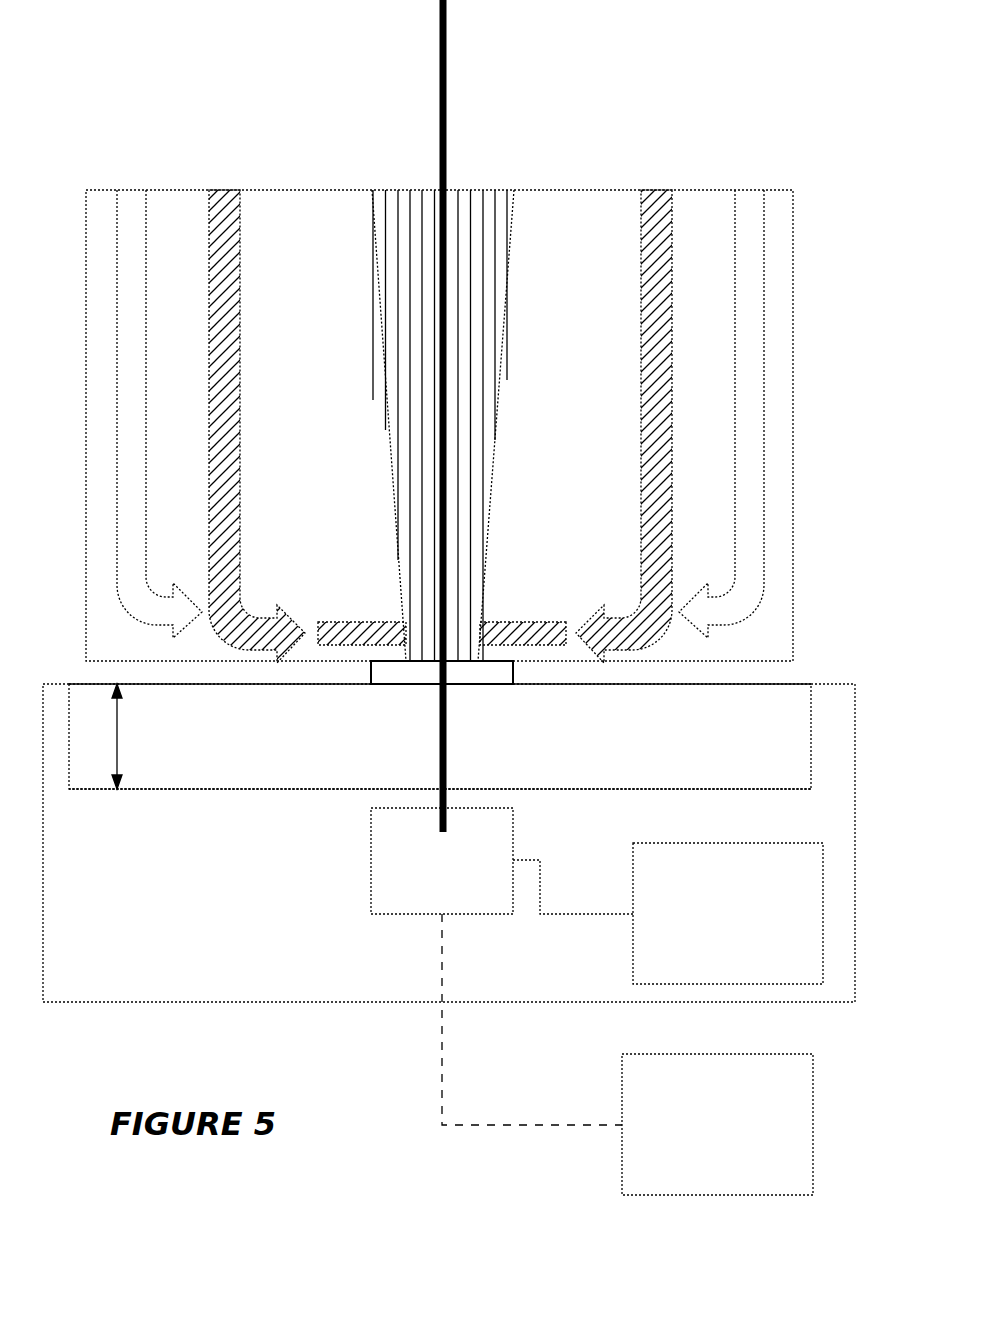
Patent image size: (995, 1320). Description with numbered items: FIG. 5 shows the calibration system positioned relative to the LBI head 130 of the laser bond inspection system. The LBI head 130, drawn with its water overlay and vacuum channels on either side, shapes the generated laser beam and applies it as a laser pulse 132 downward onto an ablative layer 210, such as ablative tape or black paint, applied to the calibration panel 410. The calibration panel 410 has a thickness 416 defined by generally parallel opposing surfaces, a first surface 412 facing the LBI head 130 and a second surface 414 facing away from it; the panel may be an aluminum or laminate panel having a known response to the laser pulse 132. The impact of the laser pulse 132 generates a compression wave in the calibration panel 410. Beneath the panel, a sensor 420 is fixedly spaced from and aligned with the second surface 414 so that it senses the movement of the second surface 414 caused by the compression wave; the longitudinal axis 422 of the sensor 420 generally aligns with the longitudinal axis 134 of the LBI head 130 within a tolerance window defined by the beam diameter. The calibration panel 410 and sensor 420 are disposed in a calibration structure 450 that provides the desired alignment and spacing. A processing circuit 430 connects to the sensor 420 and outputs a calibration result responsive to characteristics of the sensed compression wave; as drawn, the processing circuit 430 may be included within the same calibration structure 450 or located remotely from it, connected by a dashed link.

The LBI head 130 is at (542, 192).
The laser pulse 132 is at (408, 208).
The longitudinal axis 134 is at (553, 416).
The longitudinal axis of the sensor 422 is at (447, 100).
The ablative layer 210 is at (407, 674).
The calibration panel 410 is at (809, 776).
The first surface 412 is at (223, 684).
The second surface 414 is at (297, 790).
The thickness 416 is at (135, 736).
The sensor 420 is at (420, 887).
The processing circuit 430 is at (696, 1164).
The calibration structure 450 is at (246, 991).